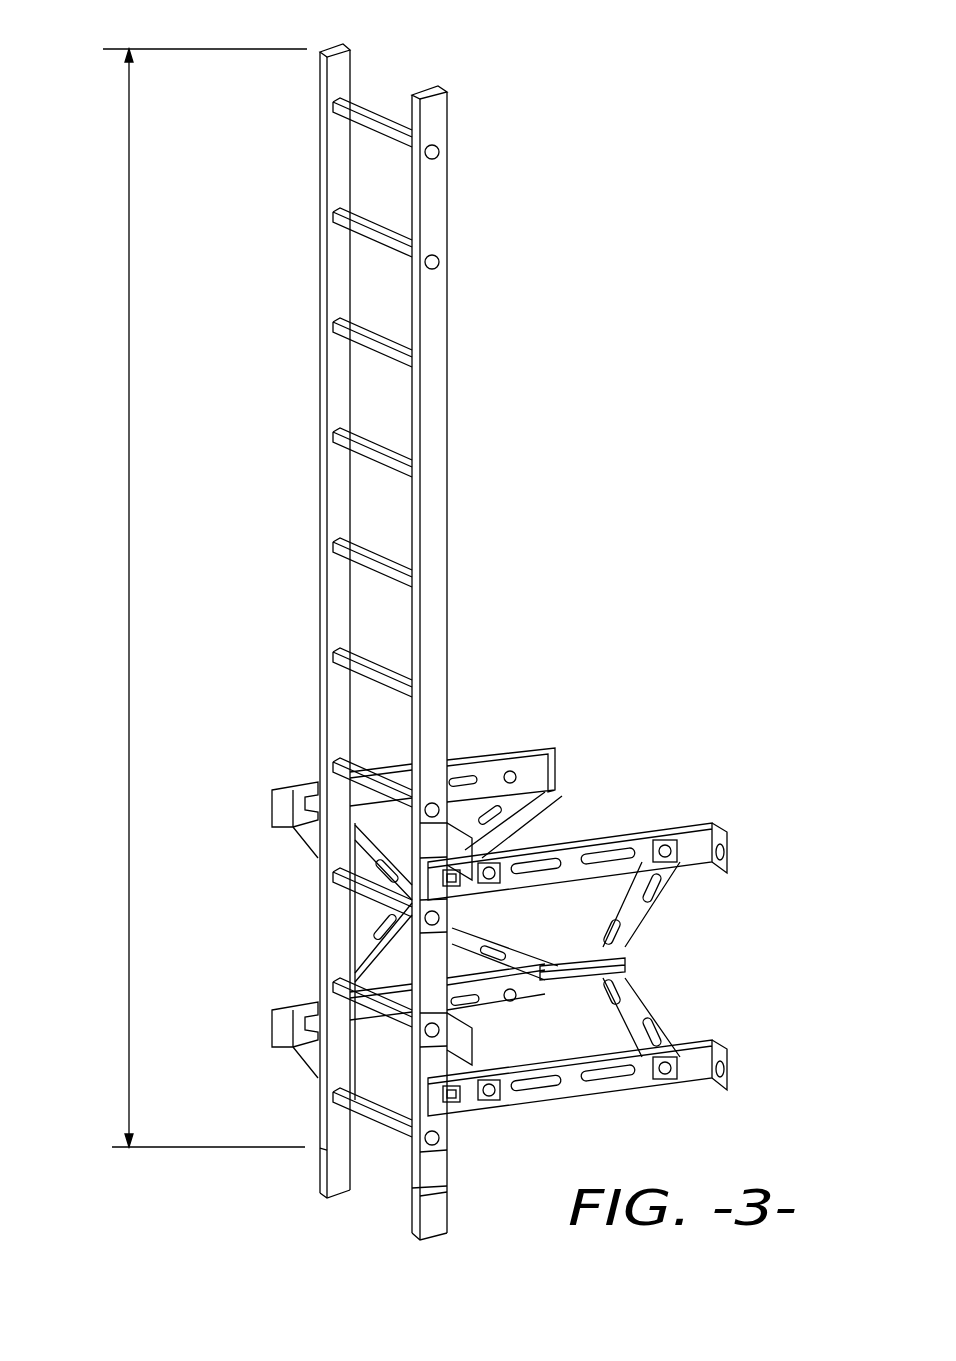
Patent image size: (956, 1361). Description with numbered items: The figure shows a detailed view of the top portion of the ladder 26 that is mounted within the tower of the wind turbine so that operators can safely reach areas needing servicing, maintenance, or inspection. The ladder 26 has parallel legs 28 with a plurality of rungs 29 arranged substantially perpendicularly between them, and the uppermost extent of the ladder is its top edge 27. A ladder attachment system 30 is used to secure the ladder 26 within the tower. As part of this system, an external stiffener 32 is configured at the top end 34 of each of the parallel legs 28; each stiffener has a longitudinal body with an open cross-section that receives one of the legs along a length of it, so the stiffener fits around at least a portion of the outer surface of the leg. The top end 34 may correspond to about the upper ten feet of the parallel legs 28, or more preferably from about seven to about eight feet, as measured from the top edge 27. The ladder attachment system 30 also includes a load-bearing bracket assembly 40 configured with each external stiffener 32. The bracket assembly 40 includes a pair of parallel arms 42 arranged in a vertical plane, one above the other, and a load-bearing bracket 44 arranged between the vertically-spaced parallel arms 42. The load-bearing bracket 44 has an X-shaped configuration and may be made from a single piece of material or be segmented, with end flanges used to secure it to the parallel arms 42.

The ladder 26 is at (371, 625).
The top edge 27 is at (333, 46).
The parallel legs 28 is at (377, 625).
The rungs 29 is at (373, 440).
The ladder attachment system 30 is at (600, 168).
The external stiffener 32 is at (428, 637).
The top end 34 is at (129, 503).
The load-bearing bracket assembly 40 is at (536, 943).
The parallel arms 42 is at (688, 833).
The load-bearing bracket 44 is at (627, 977).